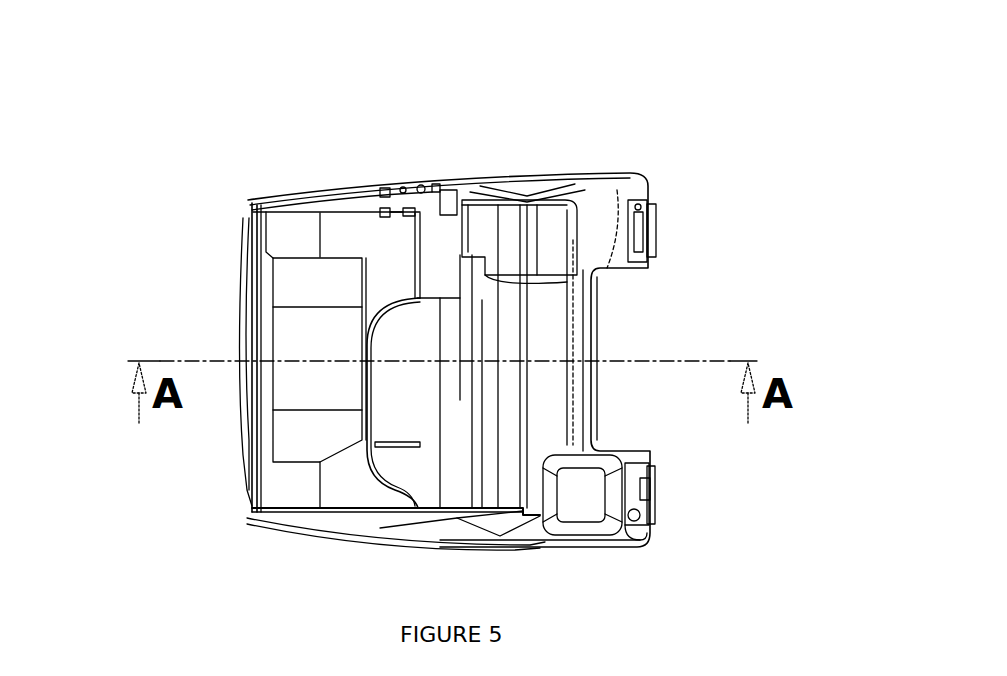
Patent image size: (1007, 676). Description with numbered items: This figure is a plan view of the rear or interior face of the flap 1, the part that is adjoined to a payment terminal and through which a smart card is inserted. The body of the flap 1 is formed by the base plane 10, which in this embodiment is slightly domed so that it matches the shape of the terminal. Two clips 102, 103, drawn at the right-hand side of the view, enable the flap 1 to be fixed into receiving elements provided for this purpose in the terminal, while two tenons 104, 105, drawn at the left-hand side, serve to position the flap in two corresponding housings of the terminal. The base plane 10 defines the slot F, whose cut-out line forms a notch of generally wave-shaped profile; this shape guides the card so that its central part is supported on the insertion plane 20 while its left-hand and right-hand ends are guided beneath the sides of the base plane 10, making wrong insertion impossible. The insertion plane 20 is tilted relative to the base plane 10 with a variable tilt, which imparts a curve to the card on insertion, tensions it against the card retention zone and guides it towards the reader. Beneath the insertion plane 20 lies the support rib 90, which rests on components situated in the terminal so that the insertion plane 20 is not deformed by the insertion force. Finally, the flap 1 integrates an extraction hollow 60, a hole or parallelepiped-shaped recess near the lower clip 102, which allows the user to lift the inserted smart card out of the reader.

The flap 1 is at (533, 143).
The base plane 10 is at (324, 267).
The slot F is at (383, 300).
The insertion plane 20 is at (417, 368).
The extraction hollow 60 is at (590, 473).
The support rib 90 is at (396, 451).
The clip 102 is at (648, 495).
The clip 103 is at (650, 228).
The tenon 104 is at (257, 510).
The tenon 105 is at (248, 202).